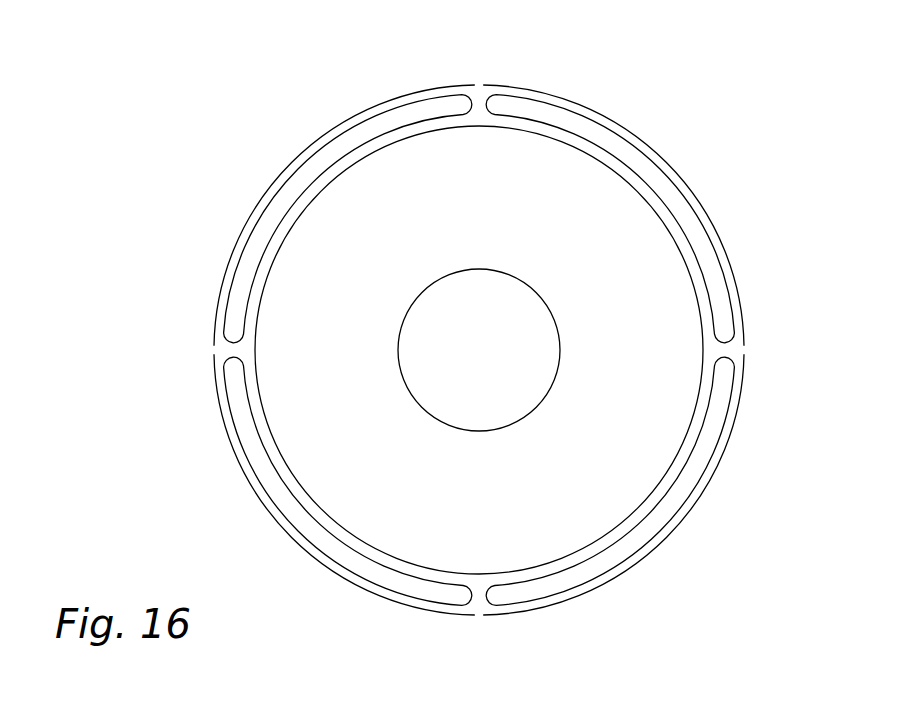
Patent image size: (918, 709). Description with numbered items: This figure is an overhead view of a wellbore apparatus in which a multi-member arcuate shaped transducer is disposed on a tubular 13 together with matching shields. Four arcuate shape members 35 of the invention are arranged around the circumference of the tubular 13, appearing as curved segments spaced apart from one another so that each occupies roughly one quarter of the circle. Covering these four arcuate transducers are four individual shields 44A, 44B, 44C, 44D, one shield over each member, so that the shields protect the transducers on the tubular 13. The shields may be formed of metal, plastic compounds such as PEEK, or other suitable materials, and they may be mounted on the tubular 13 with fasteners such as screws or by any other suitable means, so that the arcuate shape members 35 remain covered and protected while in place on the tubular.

The tubular 13 is at (623, 205).
The arcuate shape member 35 is at (238, 275).
The shield 44A is at (267, 508).
The shield 44B is at (692, 508).
The shield 44C is at (560, 99).
The shield 44D is at (371, 105).